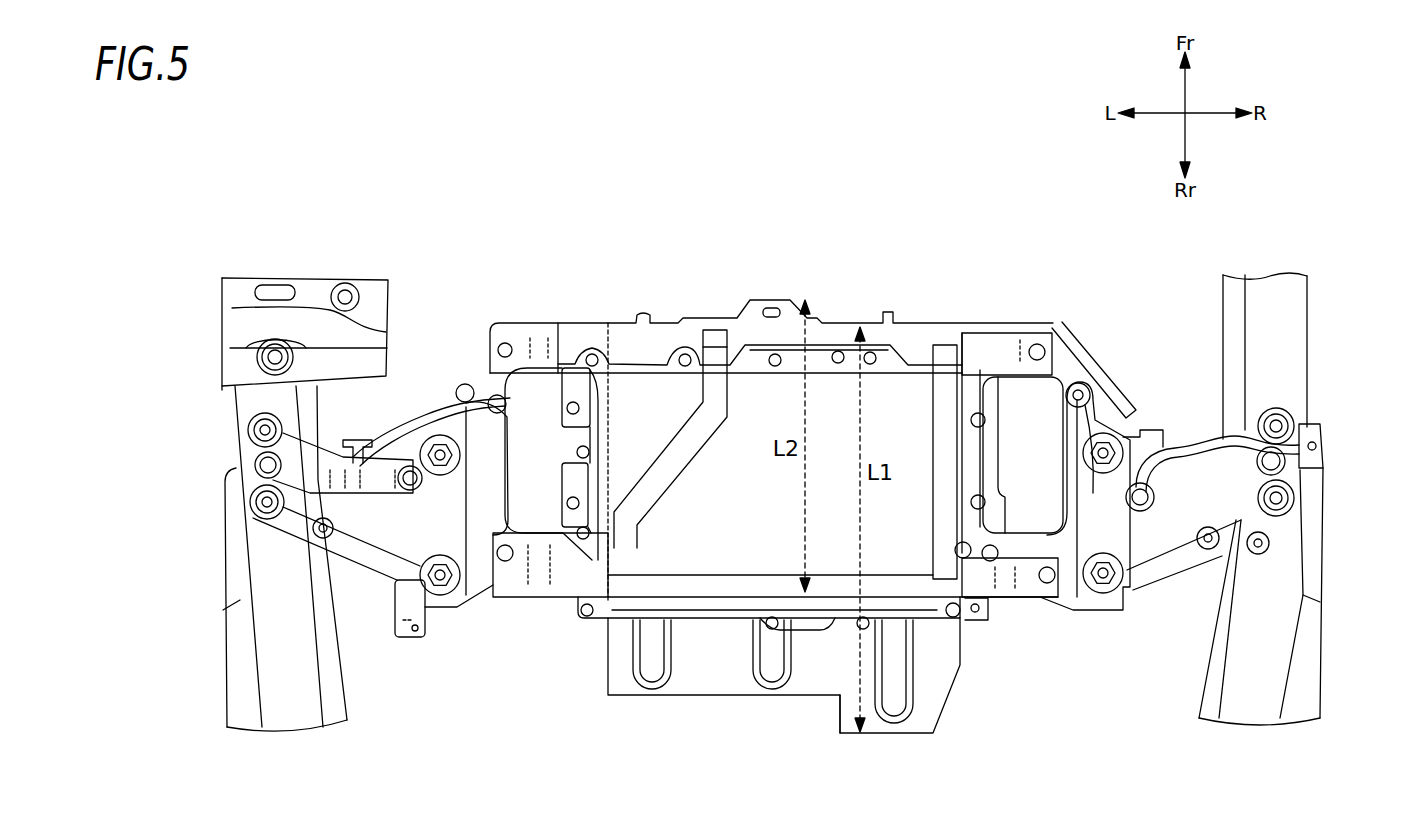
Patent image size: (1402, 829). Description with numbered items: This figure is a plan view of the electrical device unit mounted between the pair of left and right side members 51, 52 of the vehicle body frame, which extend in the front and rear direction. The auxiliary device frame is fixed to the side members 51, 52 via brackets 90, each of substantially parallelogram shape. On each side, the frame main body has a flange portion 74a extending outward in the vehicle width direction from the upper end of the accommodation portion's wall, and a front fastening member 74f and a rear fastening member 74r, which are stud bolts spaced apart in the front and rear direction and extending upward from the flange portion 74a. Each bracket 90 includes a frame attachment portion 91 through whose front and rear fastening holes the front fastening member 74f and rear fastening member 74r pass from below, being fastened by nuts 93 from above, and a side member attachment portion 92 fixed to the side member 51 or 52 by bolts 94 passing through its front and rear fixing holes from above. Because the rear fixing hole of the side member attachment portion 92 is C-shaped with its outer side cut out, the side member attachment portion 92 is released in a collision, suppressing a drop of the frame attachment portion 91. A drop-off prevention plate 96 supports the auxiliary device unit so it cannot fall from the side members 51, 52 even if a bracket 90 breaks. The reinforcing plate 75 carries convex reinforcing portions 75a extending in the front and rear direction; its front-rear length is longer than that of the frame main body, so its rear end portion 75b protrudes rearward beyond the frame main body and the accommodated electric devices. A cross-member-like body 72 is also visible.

The side member 51 is at (292, 714).
The side member 52 is at (1252, 698).
The cross member body 72 is at (580, 573).
The flange portion 74a is at (477, 473).
The front fastening member 74f is at (445, 433).
The rear fastening member 74r is at (440, 597).
The reinforcing plate 75 is at (808, 686).
The reinforcing portion 75a is at (770, 662).
The rear end portion 75b is at (812, 675).
The bracket 90 is at (372, 533).
The frame attachment portion 91 is at (457, 507).
The side member attachment portion 92 is at (262, 462).
The nut 93 is at (413, 465).
The bolt 94 is at (258, 426).
The drop-off prevention plate 96 is at (356, 442).